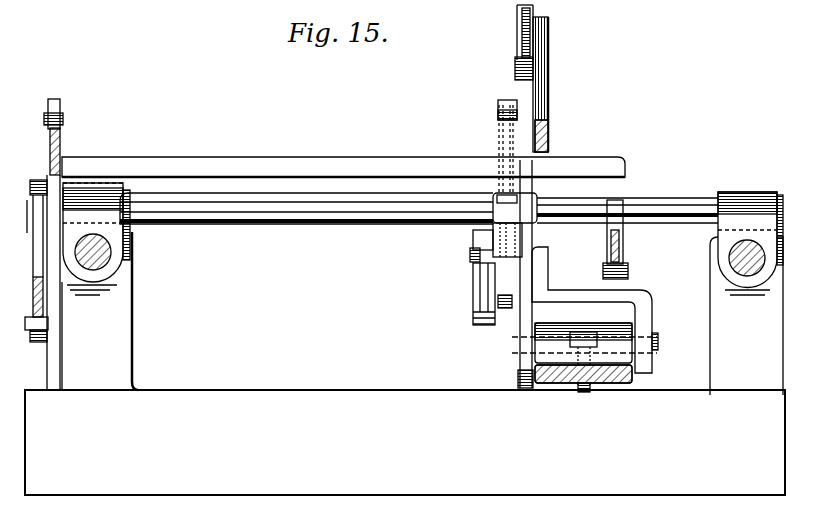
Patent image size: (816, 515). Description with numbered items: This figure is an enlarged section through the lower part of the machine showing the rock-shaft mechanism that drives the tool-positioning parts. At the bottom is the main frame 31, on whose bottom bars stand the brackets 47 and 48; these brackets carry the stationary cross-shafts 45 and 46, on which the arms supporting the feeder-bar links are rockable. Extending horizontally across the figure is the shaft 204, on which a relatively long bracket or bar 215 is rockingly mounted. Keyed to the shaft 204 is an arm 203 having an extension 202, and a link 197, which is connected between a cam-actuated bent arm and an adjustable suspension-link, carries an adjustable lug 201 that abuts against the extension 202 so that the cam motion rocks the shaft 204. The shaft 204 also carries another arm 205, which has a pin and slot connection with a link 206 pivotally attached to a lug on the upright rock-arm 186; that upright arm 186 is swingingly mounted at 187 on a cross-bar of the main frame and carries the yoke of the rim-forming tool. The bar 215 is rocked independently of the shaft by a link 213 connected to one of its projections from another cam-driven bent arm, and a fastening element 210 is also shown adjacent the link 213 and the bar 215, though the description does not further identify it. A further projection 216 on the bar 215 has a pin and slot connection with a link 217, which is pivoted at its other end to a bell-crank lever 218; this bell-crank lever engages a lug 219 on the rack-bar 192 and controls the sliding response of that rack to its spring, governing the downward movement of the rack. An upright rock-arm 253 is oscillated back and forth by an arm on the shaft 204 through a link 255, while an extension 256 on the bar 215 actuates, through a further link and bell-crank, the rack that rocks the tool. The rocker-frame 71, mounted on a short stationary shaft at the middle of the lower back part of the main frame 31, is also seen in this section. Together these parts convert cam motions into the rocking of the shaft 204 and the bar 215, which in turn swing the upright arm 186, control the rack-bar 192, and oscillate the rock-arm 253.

The main frame 31 is at (405, 442).
The stationary cross-shaft 45 is at (100, 253).
The stationary cross-shaft 46 is at (747, 267).
The bracket 47 is at (103, 353).
The bracket 48 is at (746, 293).
The rocker-frame 71 is at (610, 385).
The upright arm 186 is at (643, 298).
The pivotal mounting of the upright arm 187 is at (655, 342).
The rack-bar 192 is at (535, 5).
The link 197 is at (540, 82).
The adjustable lug 201 is at (542, 138).
The extension 202 is at (517, 72).
The arm 203 is at (503, 152).
The shaft 204 is at (234, 222).
The arm 205 is at (43, 263).
The link 206 is at (42, 303).
The bolt 210 is at (607, 255).
The link 213 is at (628, 262).
The bracket or bar 215 is at (255, 166).
The projection 216 is at (65, 128).
The link 217 is at (60, 150).
The bell-crank lever 218 is at (475, 233).
The lug 219 is at (477, 246).
The upright rock-arm 253 is at (530, 25).
The link 255 is at (508, 110).
The extension 256 is at (483, 252).